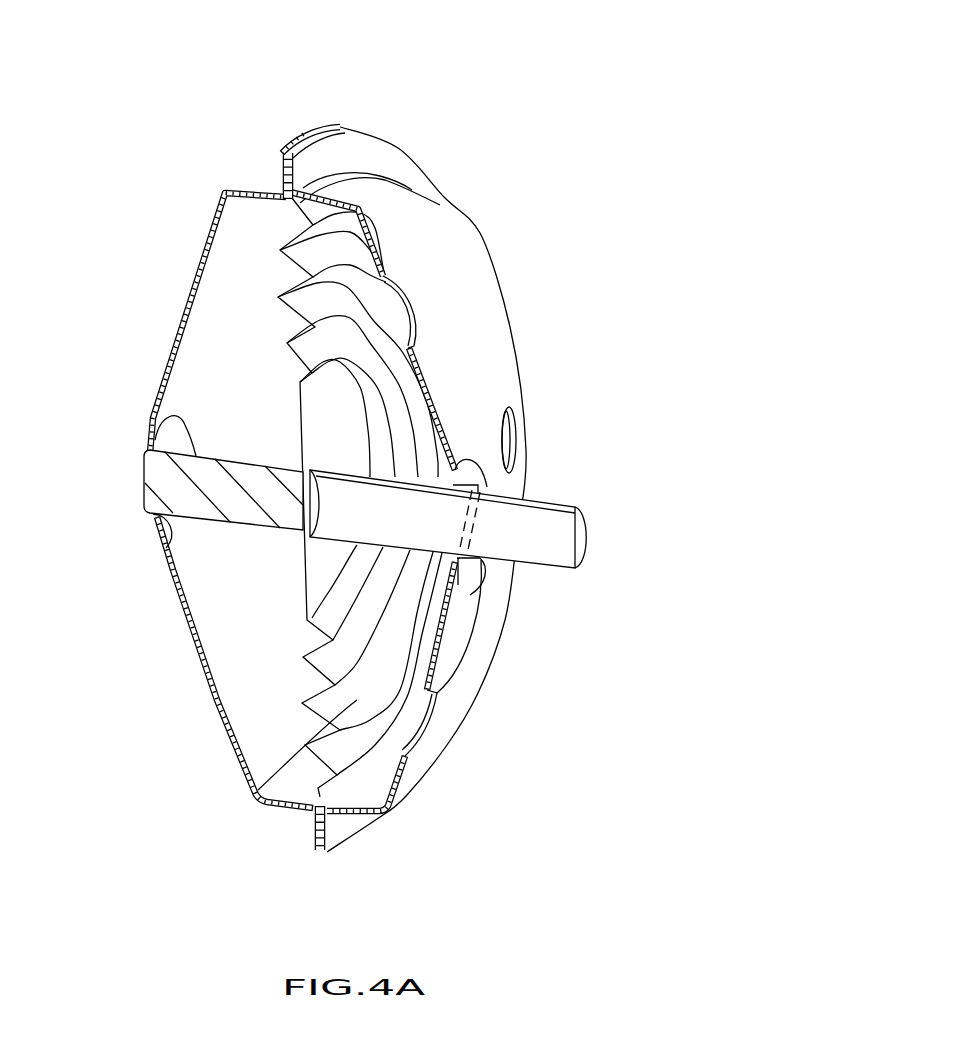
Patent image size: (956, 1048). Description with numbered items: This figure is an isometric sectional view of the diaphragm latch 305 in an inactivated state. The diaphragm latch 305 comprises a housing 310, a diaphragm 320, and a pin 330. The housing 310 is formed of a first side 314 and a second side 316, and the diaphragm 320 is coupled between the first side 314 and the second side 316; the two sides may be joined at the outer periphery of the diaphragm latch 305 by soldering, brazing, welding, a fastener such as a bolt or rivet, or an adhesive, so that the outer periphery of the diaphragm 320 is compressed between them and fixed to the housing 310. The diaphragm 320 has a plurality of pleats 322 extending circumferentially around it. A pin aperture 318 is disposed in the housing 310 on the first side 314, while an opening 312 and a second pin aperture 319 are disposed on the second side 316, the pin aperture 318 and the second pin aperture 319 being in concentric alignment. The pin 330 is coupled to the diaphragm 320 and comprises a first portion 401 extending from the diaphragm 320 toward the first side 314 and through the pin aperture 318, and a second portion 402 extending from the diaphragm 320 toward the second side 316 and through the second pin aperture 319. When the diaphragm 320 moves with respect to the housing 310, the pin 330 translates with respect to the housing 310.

The diaphragm latch 305 is at (375, 441).
The housing 310 is at (478, 233).
The opening 312 is at (385, 282).
The first side 314 is at (178, 332).
The second side 316 is at (490, 303).
The pin aperture 318 is at (148, 456).
The second pin aperture 319 is at (478, 565).
The diaphragm 320 is at (333, 707).
The pleats 322 is at (272, 797).
The pin 330 is at (411, 476).
The first portion 401 is at (197, 457).
The second portion 402 is at (588, 538).